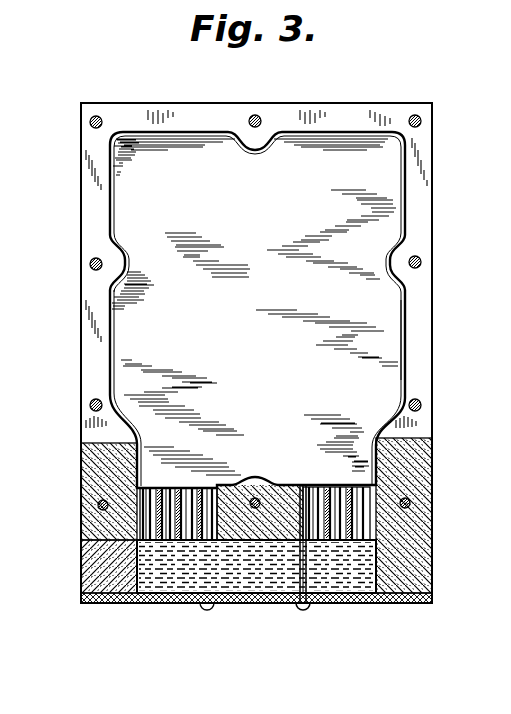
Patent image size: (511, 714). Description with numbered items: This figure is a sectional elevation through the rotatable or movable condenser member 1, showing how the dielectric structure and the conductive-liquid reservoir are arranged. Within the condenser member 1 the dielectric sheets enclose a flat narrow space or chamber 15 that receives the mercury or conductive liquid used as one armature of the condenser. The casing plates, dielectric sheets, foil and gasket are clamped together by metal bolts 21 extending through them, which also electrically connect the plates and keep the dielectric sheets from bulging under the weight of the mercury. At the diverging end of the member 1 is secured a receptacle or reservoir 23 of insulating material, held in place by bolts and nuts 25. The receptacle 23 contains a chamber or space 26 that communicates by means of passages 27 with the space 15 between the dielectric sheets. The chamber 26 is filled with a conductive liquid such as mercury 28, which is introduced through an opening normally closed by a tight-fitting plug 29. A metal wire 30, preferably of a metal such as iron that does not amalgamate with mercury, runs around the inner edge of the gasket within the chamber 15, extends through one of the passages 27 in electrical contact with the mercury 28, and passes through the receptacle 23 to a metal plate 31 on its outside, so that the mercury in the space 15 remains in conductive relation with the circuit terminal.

The condenser member 1 is at (432, 425).
The space or chamber 15 is at (384, 382).
The metal bolts 21 is at (421, 121).
The receptacle or reservoir 23 is at (342, 598).
The bolts and nuts 25 is at (411, 503).
The chamber or space 26 is at (153, 598).
The passages 27 is at (336, 488).
The mercury 28 is at (188, 572).
The plug 29 is at (86, 573).
The metal wire 30 is at (406, 340).
The metal plate 31 is at (277, 603).